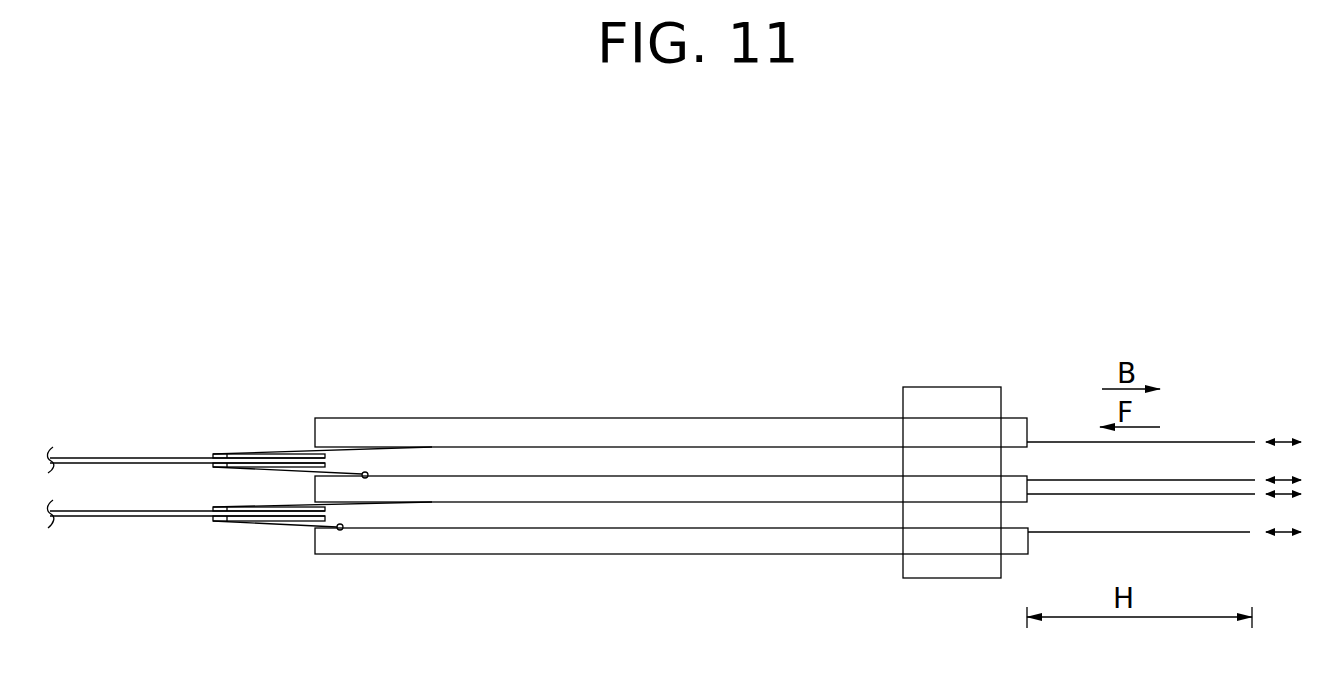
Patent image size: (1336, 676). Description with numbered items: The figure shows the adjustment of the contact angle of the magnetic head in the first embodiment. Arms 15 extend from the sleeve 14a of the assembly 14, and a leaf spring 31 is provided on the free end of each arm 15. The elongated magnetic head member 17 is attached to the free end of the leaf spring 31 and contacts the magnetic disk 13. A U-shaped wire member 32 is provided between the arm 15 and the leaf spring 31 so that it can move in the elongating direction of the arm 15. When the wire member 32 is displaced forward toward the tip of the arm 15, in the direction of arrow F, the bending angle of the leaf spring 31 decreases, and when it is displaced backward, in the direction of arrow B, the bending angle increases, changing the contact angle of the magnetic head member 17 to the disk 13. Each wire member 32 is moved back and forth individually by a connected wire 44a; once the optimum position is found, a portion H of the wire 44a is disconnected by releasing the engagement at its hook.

The magnetic disk 13 is at (93, 456).
The optical connector 14 is at (944, 192).
The sleeve 14a is at (935, 398).
The arm 15 is at (528, 430).
The elongated magnetic head member 17 is at (250, 452).
The leaf spring 31 is at (392, 447).
The U-shaped wire member 32 is at (365, 447).
The wire 44a is at (1213, 480).